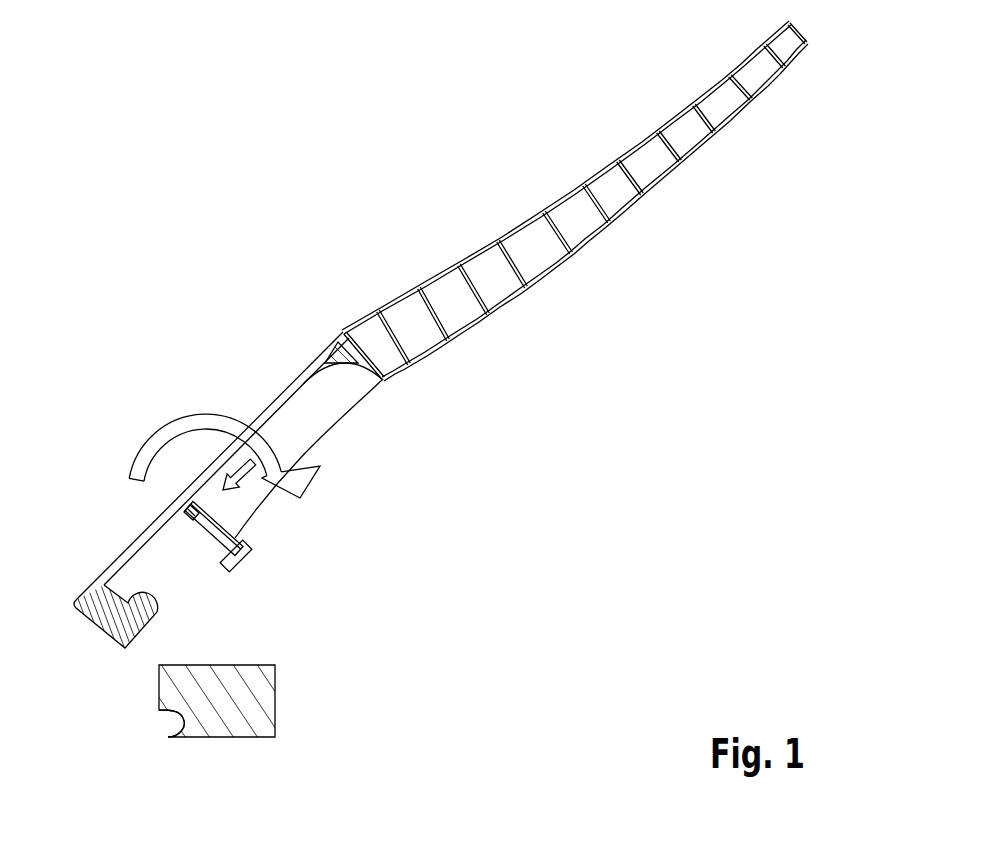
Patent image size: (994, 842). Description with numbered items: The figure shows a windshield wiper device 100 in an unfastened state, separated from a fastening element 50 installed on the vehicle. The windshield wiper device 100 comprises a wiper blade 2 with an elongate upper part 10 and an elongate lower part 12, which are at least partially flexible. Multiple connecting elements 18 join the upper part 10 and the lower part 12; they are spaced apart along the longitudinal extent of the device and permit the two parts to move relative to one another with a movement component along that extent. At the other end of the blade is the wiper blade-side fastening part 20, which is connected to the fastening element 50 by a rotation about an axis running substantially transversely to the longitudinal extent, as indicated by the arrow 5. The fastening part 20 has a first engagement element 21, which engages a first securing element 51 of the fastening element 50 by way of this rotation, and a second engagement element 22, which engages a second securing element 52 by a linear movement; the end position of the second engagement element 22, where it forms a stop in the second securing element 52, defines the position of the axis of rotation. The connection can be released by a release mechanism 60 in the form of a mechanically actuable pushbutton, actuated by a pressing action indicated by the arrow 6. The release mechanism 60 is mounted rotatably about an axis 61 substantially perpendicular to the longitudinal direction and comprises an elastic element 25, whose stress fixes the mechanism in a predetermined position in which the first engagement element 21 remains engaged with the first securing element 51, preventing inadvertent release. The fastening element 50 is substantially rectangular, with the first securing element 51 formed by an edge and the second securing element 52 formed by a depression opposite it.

The windshield wiper device 100 is at (346, 238).
The wiper blade 2 is at (666, 172).
The elongate upper part 10 is at (707, 90).
The elongate lower part 12 is at (563, 257).
The connecting elements 18 is at (667, 156).
The wiper blade-side fastening part 20 is at (212, 497).
The second engagement element 22 is at (158, 608).
The elastic element 25 is at (187, 517).
The arrow 6 is at (237, 472).
The arrow 5 is at (303, 470).
The release mechanism 60 is at (231, 513).
The axis 61 is at (237, 535).
The first engagement element 21 is at (240, 556).
The fastening element 50 is at (145, 733).
The first securing element 51 is at (276, 703).
The second securing element 52 is at (165, 716).